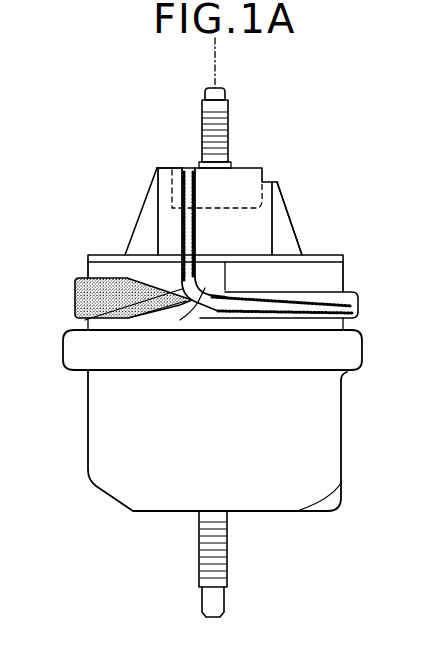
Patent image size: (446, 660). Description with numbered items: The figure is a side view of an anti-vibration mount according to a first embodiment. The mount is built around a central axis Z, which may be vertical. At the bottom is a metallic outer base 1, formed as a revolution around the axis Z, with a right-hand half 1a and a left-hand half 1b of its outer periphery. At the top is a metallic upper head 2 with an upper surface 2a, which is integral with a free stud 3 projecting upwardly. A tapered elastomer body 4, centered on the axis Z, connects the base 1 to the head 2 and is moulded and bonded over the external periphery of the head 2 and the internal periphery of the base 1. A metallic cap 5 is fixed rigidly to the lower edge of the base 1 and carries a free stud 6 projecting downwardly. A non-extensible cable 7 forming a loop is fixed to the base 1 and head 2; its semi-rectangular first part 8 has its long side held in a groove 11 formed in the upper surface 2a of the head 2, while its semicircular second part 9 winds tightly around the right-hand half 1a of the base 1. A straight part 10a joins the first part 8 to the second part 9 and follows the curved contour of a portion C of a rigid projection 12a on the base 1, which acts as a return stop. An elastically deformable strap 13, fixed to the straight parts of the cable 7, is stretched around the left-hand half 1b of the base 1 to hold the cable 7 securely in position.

The outer base 1 is at (103, 270).
The right-hand half of the base 1a is at (330, 278).
The left-hand half of the base 1b is at (115, 271).
The upper head 2 is at (245, 181).
The upper surface of the head 2a is at (172, 173).
The free stud 3 is at (229, 123).
The elastomer body 4 is at (254, 230).
The cap 5 is at (115, 457).
The free stud 6 is at (201, 568).
The cable 7 is at (174, 240).
The first part of the cable 8 is at (180, 193).
The second part of the cable 9 is at (346, 306).
The straight part of the cable 10a is at (190, 315).
The groove 11 is at (183, 167).
The rigid projection 12a is at (213, 282).
The strap 13 is at (100, 297).
The portion of the projection C is at (87, 317).
The axis Z is at (215, 52).